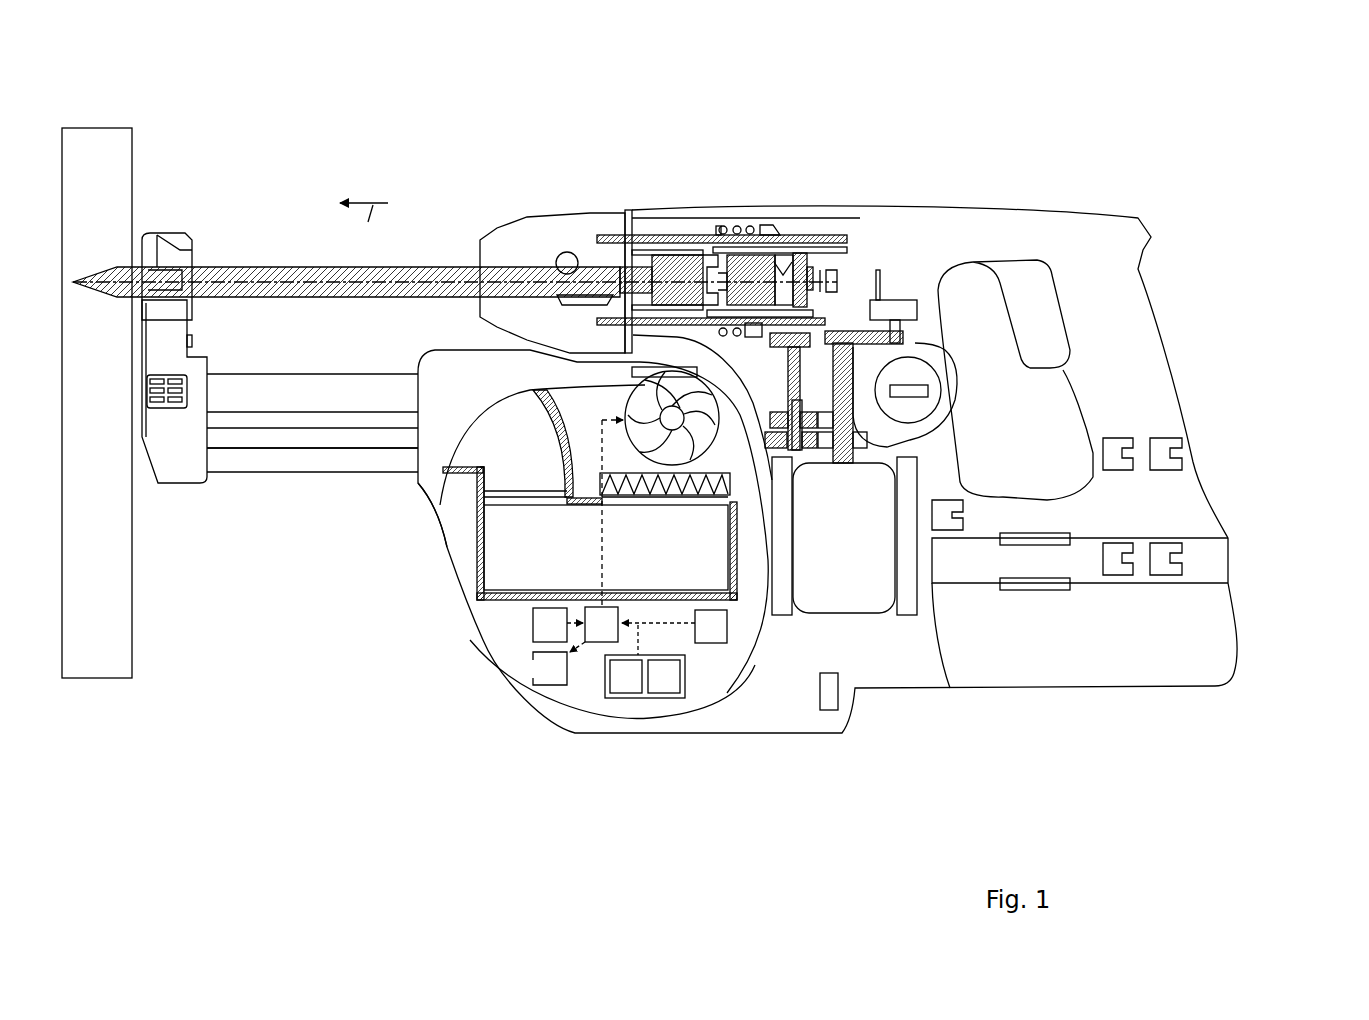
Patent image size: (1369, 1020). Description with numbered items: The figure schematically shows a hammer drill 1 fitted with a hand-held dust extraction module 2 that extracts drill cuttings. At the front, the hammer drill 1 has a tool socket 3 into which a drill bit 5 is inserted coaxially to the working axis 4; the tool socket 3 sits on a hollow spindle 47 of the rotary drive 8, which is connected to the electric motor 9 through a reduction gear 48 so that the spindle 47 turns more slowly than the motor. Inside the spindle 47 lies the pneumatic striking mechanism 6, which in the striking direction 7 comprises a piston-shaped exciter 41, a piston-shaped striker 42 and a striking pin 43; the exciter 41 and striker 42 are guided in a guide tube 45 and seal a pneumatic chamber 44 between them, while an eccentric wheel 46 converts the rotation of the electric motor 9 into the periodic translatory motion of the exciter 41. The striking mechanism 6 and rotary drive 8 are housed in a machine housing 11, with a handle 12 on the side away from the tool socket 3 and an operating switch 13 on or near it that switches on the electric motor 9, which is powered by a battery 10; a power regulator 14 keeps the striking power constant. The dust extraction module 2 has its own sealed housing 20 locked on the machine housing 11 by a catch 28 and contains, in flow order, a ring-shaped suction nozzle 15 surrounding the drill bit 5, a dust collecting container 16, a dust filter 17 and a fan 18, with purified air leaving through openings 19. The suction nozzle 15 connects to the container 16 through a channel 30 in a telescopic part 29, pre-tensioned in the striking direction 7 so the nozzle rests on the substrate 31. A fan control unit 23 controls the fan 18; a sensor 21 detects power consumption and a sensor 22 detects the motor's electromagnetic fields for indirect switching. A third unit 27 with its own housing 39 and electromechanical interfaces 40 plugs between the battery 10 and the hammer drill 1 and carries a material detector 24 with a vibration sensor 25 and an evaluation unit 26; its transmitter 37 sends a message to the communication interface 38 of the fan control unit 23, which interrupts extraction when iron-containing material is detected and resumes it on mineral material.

The hammer drill 1 is at (490, 108).
The dust extraction module 2 is at (330, 840).
The tool socket 3 is at (583, 245).
The working axis 4 is at (460, 268).
The drill bit 5 is at (303, 268).
The pneumatic striking mechanism 6 is at (680, 140).
The striking direction 7 is at (364, 227).
The rotary drive 8 is at (885, 140).
The electric motor 9 is at (943, 513).
The battery 10 is at (1157, 644).
The machine housing 11 is at (638, 212).
The handle 12 is at (1137, 308).
The operating switch 13 is at (1045, 295).
The power regulator 14 is at (857, 503).
The suction nozzle 15 is at (152, 302).
The dust collecting container 16 is at (510, 553).
The dust filter 17 is at (828, 683).
The fan 18 is at (692, 377).
The openings 19 is at (690, 398).
The housing 20 is at (450, 543).
The sensor 21 is at (542, 628).
The sensor 22 is at (543, 670).
The fan control unit 23 is at (598, 623).
The material detector 24 is at (1167, 452).
The vibration sensor 25 is at (630, 678).
The evaluation unit 26 is at (665, 678).
The third unit 27 is at (1288, 437).
The catch 28 is at (675, 422).
The telescopic part 29 is at (253, 458).
The channel 30 is at (502, 462).
The substrate 31 is at (122, 152).
The transmitter 37 is at (1123, 452).
The communication interface 38 is at (712, 628).
The housing 39 is at (1199, 558).
The electromechanical interfaces 40 is at (1070, 540).
The exciter 41 is at (808, 285).
The striker 42 is at (740, 270).
The striking pin 43 is at (670, 270).
The pneumatic chamber 44 is at (782, 272).
The guide tube 45 is at (703, 273).
The eccentric wheel 46 is at (910, 300).
The spindle 47 is at (823, 323).
The reduction gear 48 is at (845, 333).